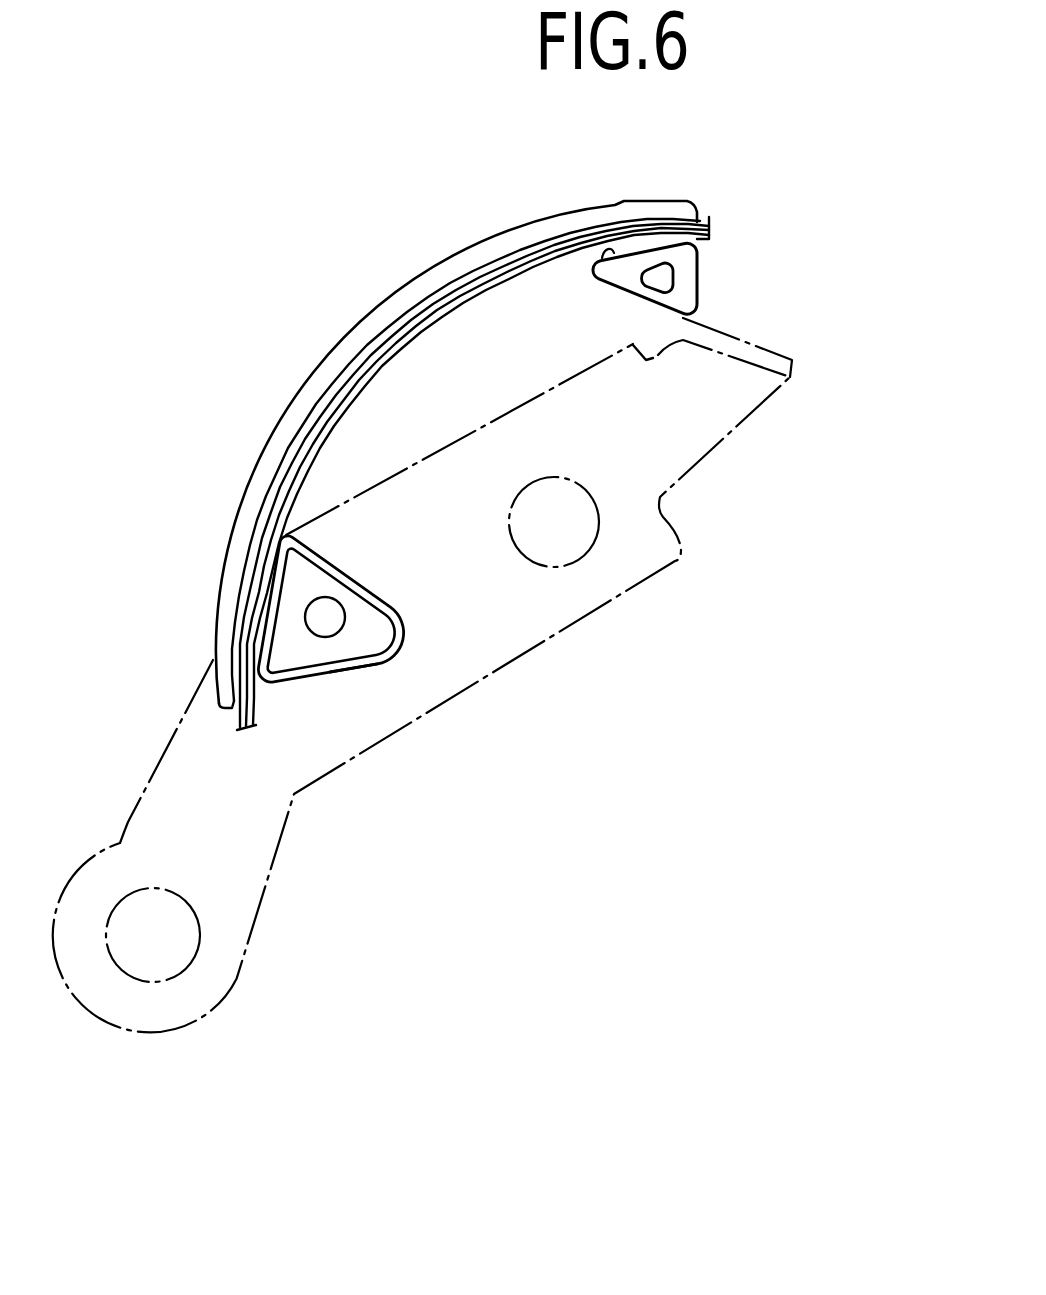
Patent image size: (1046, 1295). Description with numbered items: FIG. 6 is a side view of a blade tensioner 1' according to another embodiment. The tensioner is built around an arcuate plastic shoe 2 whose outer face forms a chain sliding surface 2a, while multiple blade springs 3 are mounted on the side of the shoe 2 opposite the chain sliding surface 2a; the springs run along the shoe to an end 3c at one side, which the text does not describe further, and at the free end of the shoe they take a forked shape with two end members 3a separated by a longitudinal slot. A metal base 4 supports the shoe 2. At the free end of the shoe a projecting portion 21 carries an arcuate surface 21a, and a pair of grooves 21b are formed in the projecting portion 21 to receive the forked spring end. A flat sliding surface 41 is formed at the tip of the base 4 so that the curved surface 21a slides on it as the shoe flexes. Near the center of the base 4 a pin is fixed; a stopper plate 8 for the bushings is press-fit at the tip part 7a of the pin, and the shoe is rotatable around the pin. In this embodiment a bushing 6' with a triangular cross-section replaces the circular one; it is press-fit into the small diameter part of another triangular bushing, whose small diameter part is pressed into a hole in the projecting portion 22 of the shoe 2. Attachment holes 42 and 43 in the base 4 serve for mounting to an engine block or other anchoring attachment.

The blade tensioner 1' is at (500, 485).
The blade shoe 2 is at (330, 357).
The chain sliding surface 2a is at (500, 230).
The blade springs 3 is at (407, 333).
The end members 3a is at (706, 216).
The lining end 3c is at (238, 730).
The base 4 is at (527, 652).
The bushing 6' is at (392, 746).
The tip part of pin 7a is at (328, 630).
The stopper plate 8 is at (350, 589).
The projecting portion 21 is at (697, 283).
The arcuate surface 21a is at (620, 325).
The grooves 21b is at (601, 257).
The projecting portion 22 is at (286, 531).
The sliding surface 41 is at (795, 345).
The attachment hole 42 is at (601, 530).
The attachment hole 43 is at (154, 986).